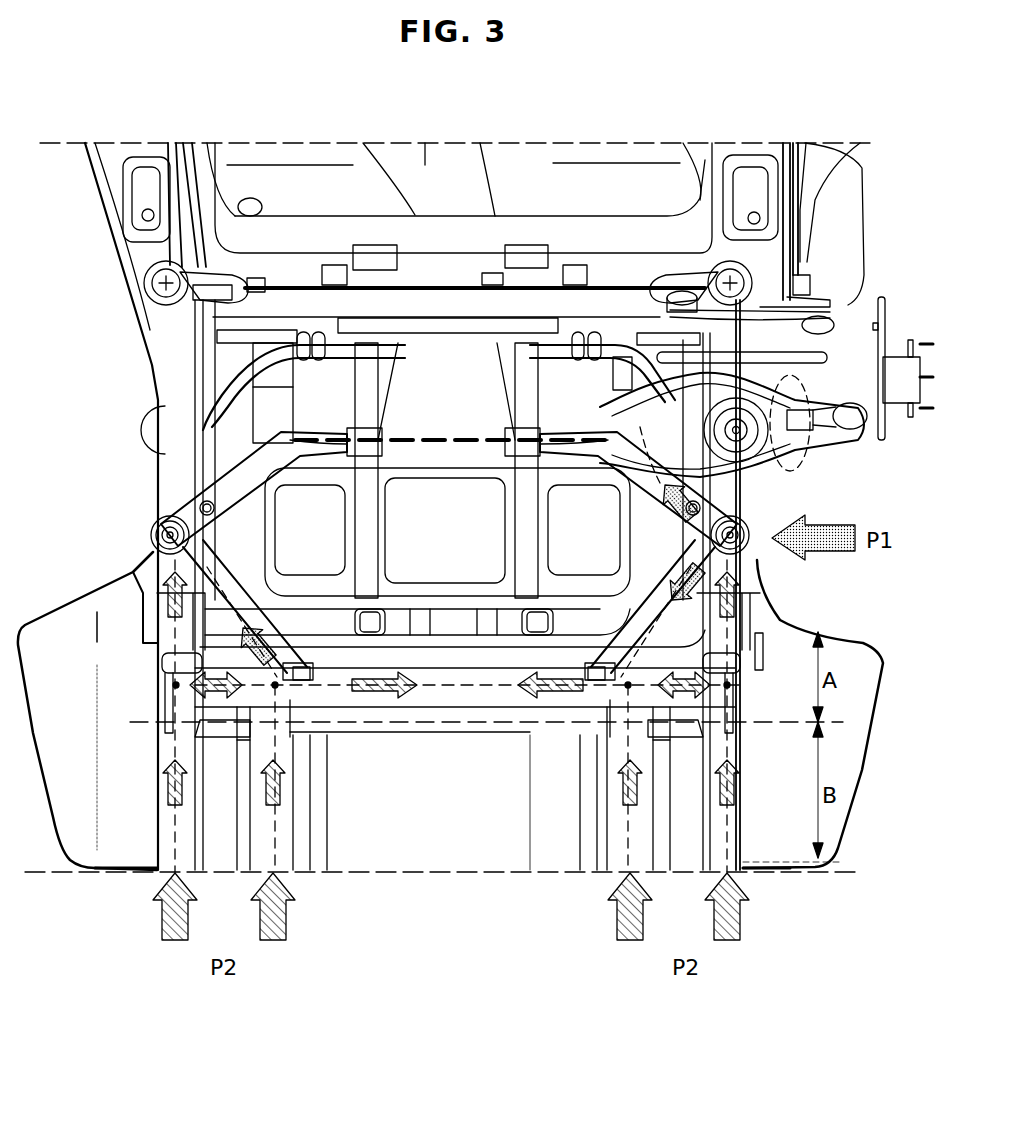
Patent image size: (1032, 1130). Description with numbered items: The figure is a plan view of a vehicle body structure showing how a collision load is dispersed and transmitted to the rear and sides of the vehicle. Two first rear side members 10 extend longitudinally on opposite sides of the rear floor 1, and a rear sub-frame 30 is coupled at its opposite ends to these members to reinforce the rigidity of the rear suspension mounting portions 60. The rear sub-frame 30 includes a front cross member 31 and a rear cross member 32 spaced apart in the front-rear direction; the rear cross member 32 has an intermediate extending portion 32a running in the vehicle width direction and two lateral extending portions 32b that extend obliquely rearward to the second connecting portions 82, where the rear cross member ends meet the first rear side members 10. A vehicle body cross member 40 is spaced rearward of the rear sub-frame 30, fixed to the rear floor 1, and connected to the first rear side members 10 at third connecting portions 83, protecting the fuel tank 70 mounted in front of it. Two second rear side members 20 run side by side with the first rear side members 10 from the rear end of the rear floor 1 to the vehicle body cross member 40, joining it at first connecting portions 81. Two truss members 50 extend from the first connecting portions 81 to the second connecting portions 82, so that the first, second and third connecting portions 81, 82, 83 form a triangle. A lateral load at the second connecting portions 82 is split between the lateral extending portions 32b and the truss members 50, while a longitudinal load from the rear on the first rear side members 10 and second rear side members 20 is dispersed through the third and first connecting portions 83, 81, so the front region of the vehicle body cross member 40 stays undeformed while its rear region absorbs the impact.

The rear floor 1 is at (430, 830).
The first rear side member 10 is at (165, 828).
The second rear side member 20 is at (283, 828).
The rear sub-frame 30 is at (457, 278).
The front cross member 31 is at (512, 305).
The rear cross member 32 is at (450, 495).
The intermediate extending portion 32a is at (445, 450).
The lateral extending portion 32b is at (455, 545).
The vehicle body cross member 40 is at (455, 700).
The truss member 50 is at (222, 625).
The rear suspension mounting portion 60 is at (742, 420).
The fuel tank 70 is at (250, 578).
The first connecting portion 81 is at (340, 708).
The second connecting portion 82 is at (168, 537).
The third connecting portion 83 is at (176, 685).